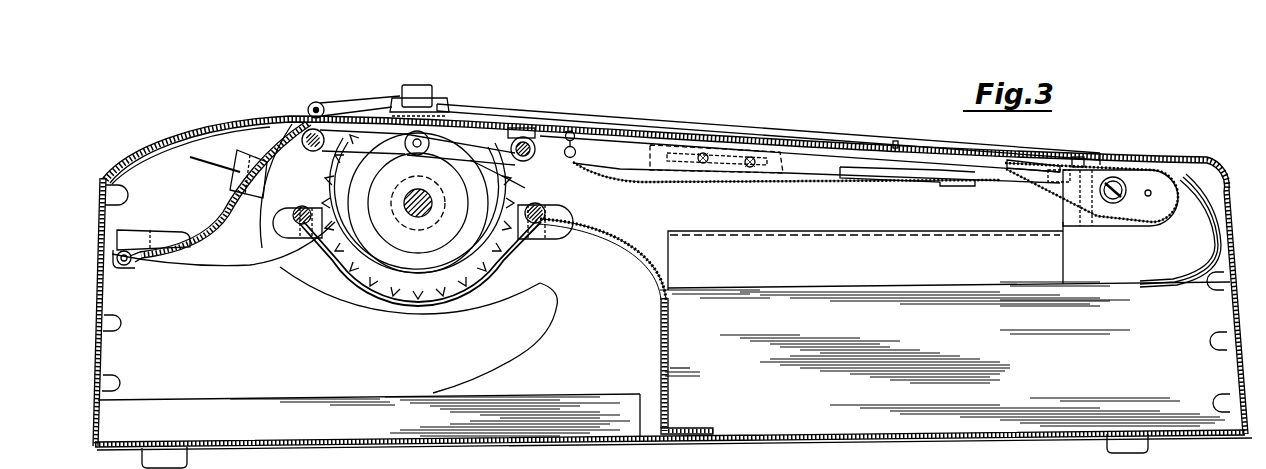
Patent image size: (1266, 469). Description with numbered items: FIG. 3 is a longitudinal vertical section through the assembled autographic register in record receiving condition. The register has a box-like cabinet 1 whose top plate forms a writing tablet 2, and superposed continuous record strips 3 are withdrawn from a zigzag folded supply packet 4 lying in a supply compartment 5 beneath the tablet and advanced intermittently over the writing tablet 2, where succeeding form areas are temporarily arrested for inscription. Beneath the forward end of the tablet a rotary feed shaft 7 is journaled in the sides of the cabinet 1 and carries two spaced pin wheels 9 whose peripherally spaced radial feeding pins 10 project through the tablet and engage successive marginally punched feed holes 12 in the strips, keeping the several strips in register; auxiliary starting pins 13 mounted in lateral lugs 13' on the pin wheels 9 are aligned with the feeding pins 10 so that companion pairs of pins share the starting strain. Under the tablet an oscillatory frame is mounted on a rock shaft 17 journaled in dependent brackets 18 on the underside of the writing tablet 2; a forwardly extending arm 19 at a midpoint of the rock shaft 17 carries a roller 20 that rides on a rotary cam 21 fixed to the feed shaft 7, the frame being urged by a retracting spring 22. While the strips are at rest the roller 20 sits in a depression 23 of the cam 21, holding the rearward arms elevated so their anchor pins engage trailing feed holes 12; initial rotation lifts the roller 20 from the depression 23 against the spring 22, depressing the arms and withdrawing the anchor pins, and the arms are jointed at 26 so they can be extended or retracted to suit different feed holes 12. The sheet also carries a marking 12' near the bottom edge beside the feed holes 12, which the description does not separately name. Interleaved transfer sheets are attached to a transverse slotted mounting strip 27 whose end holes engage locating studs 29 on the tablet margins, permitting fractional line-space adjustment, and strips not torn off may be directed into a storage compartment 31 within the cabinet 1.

The cabinet 1 is at (141, 165).
The writing tablet 2 is at (648, 130).
The record strips 3 is at (1222, 234).
The supply packet 4 is at (1033, 393).
The supply compartment 5 is at (807, 268).
The rotary feed shaft 7 is at (408, 222).
The pin wheels 9 is at (398, 284).
The feeding pins 10 is at (407, 280).
The feed holes 12 is at (673, 449).
The foot 12' is at (221, 458).
The auxiliary starting pins 13 is at (394, 91).
The lateral lugs 13' is at (410, 107).
The rock shaft 17 is at (553, 152).
The dependent brackets 18 is at (524, 136).
The forwardly extending arm 19 is at (507, 178).
The roller 20 is at (380, 133).
The rotary cam 21 is at (383, 238).
The retracting spring 22 is at (570, 130).
The depression 23 is at (392, 147).
The joint 26 is at (727, 150).
The slotted mounting strip 27 is at (1045, 158).
The locating studs 29 is at (1080, 158).
The storage compartment 31 is at (597, 346).